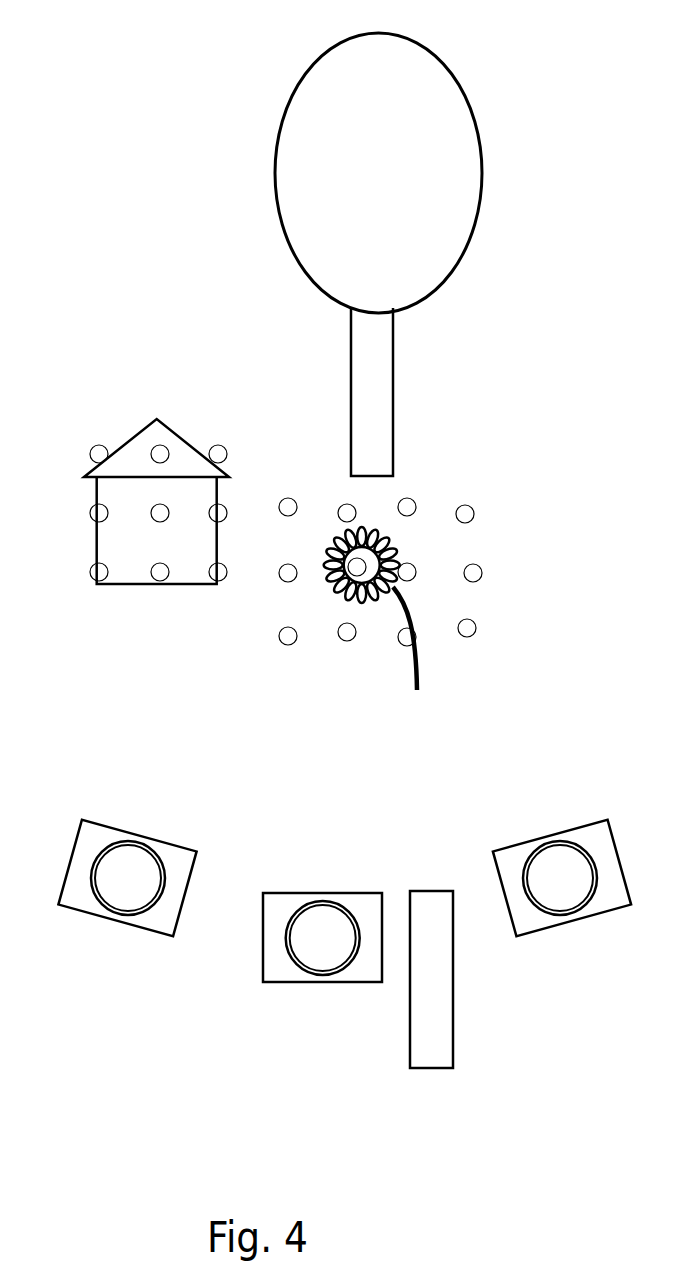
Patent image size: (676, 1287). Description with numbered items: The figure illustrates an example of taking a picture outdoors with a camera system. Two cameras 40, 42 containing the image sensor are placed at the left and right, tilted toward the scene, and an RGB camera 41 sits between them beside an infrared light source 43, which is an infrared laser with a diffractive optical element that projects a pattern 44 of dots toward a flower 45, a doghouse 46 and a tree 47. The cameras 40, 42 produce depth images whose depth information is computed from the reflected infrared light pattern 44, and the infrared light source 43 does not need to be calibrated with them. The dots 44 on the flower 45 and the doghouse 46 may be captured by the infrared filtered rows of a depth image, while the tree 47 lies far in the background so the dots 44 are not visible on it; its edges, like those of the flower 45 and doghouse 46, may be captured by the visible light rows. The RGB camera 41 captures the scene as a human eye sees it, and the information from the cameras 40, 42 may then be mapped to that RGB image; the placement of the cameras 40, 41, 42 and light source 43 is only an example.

The camera 40 is at (132, 932).
The RGB camera 41 is at (323, 982).
The camera 42 is at (573, 920).
The infrared light source 43 is at (430, 1068).
The pattern 44 is at (227, 457).
The flower 45 is at (420, 680).
The doghouse 46 is at (177, 432).
The tree 47 is at (393, 440).